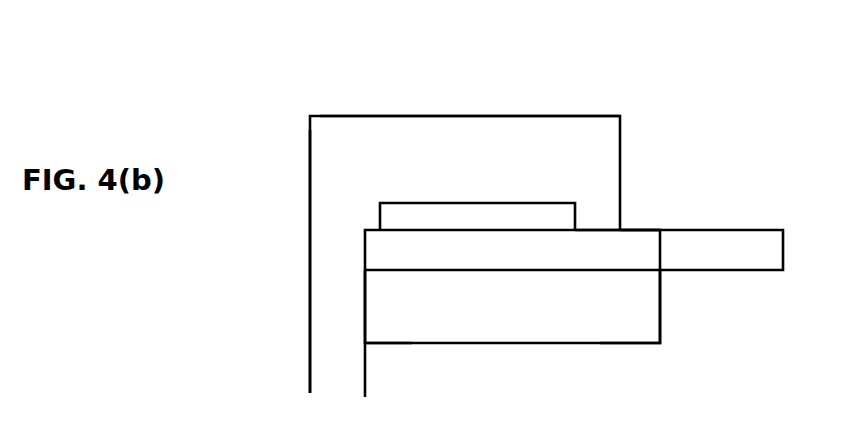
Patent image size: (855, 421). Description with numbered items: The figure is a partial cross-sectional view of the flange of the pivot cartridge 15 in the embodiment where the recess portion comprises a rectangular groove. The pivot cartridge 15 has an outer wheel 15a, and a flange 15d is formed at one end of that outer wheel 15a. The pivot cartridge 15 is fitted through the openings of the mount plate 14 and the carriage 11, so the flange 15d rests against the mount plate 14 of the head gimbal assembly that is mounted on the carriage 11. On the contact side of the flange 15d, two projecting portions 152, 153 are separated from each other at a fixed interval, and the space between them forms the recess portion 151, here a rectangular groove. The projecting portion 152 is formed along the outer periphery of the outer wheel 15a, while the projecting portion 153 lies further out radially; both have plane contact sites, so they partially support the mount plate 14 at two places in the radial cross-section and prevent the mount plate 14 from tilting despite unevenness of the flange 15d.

The pivot cartridge 15 is at (304, 86).
The flange 15d is at (520, 116).
The outer wheel 15a is at (328, 283).
The carriage 11 is at (660, 306).
The mount plate 14 is at (705, 229).
The recess portion 151 is at (500, 222).
The projecting portion 152 is at (373, 233).
The projecting portion 153 is at (600, 232).